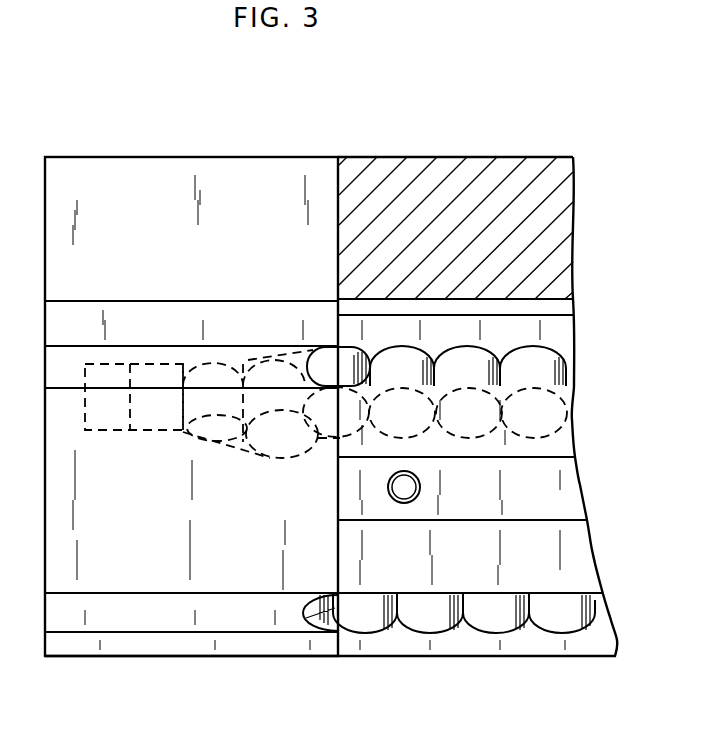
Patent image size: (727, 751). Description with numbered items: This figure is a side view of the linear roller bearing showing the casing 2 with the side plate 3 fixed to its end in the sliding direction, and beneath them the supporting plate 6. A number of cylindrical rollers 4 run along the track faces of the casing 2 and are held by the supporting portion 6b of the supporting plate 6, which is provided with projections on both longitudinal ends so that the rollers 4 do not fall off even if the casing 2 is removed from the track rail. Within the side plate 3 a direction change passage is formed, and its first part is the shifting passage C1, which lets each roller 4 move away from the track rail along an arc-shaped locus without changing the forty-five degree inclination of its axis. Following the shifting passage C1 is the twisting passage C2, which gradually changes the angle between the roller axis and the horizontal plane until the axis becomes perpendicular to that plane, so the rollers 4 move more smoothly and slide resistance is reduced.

The casing 2 is at (420, 170).
The side plate 3 is at (163, 176).
The cylindrical roller 4 is at (536, 357).
The supporting plate 6 is at (548, 497).
The supporting portion 6b is at (568, 398).
The shifting passage C1 is at (317, 442).
The twisting passage C2 is at (237, 447).